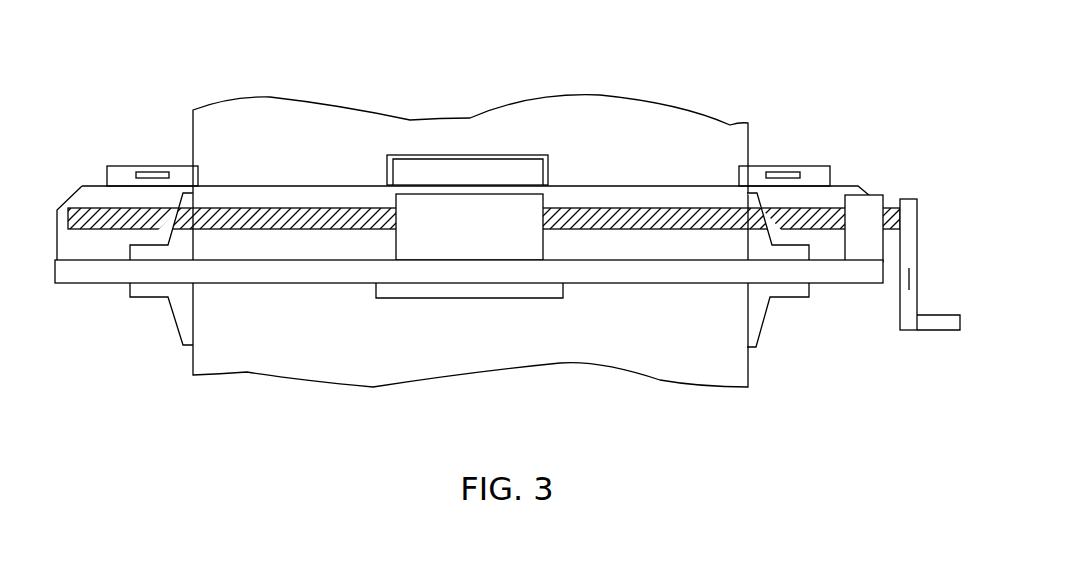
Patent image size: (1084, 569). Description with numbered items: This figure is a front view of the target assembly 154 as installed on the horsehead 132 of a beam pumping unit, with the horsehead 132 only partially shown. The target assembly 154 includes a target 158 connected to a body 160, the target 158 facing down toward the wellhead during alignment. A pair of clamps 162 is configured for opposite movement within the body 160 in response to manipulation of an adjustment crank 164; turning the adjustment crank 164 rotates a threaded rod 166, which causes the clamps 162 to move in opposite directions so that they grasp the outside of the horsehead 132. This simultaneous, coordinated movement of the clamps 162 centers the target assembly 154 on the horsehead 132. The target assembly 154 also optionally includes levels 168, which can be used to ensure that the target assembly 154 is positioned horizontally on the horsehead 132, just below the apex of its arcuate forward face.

The horsehead 132 is at (274, 111).
The target assembly 154 is at (766, 401).
The target 158 is at (563, 299).
The body 160 is at (313, 268).
The clamps 162 is at (167, 297).
The adjustment crank 164 is at (918, 232).
The threaded rod 166 is at (510, 155).
The levels 168 is at (147, 173).